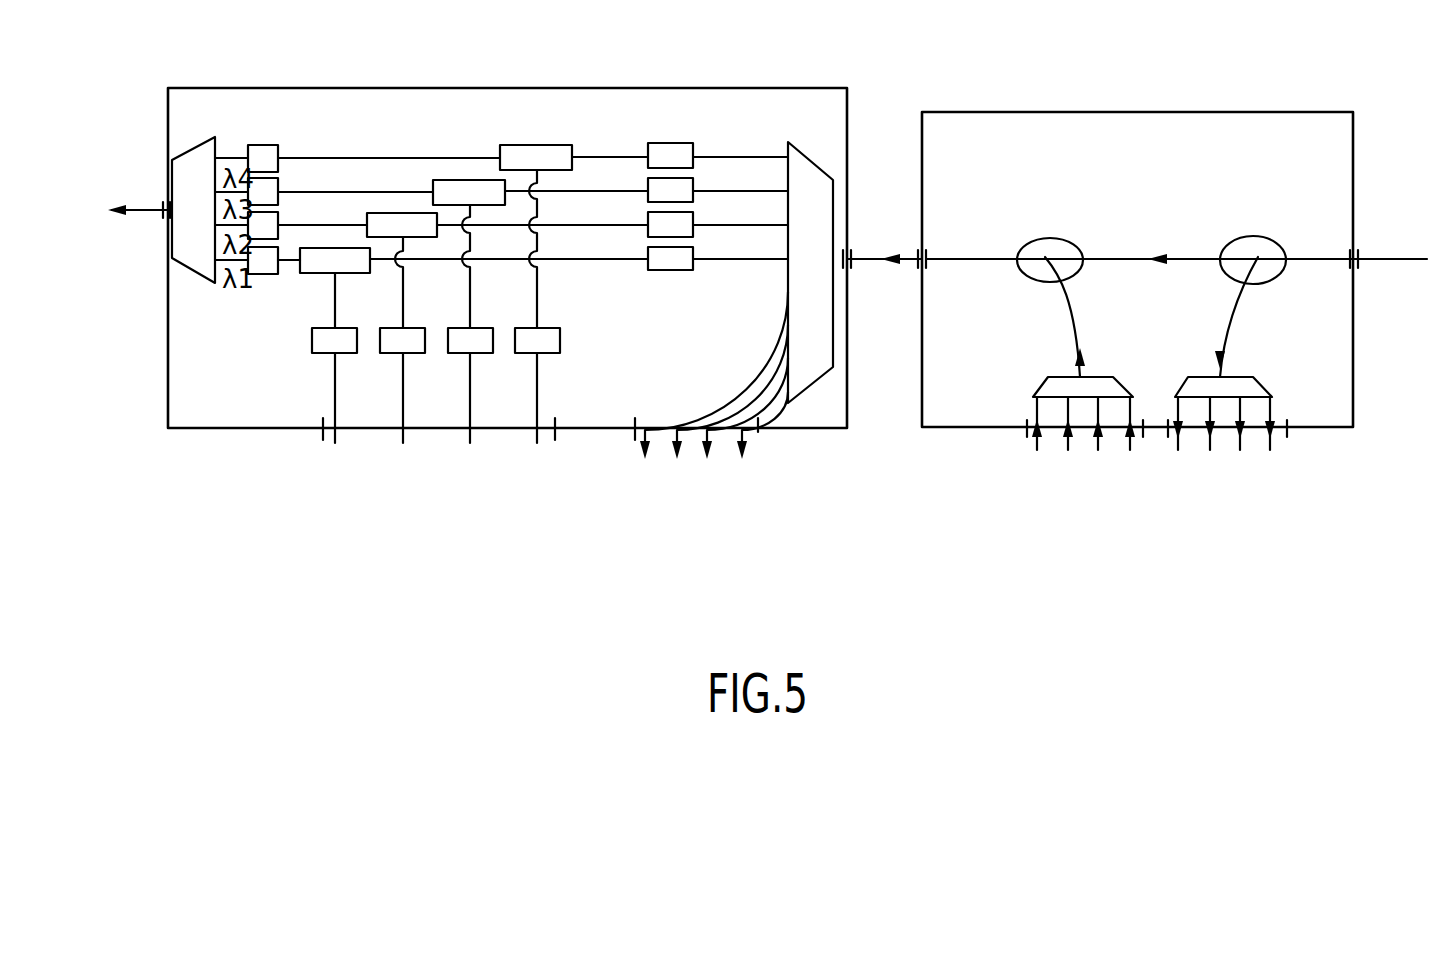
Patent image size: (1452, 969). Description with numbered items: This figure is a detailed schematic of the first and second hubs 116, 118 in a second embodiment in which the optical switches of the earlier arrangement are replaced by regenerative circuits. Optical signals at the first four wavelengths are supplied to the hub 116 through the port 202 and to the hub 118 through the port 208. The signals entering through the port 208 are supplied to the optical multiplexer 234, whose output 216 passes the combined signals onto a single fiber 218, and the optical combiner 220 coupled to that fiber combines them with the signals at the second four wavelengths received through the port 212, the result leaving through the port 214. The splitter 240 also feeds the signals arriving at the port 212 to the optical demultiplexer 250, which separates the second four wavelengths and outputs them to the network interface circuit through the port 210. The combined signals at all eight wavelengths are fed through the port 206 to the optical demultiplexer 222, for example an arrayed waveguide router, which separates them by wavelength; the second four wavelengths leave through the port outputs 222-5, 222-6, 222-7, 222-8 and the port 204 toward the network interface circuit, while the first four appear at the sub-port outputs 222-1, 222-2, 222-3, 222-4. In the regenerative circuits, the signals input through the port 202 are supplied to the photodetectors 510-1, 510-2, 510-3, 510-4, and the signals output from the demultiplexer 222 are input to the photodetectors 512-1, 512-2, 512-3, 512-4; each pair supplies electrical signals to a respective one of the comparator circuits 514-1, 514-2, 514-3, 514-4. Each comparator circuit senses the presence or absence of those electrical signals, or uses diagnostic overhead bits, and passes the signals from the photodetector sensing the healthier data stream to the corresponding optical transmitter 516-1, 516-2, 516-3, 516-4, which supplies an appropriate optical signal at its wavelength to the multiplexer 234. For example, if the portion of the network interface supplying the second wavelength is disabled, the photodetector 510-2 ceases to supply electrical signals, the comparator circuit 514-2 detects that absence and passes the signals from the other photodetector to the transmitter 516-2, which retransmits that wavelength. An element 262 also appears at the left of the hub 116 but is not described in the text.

The hub 116 is at (572, 88).
The hub 118 is at (1105, 112).
The port 202 is at (323, 440).
The port 204 is at (758, 432).
The port 206 is at (848, 257).
The port 208 is at (1027, 437).
The port 210 is at (1290, 437).
The port 212 is at (1357, 254).
The port 214 is at (925, 270).
The output 216 is at (1105, 373).
The fiber 218 is at (1074, 319).
The optical combiner 220 is at (1052, 238).
The optical demultiplexer 222 is at (790, 142).
The sub-port output 222-1 is at (740, 142).
The sub-port output 222-2 is at (740, 177).
The sub-port output 222-3 is at (740, 208).
The sub-port output 222-4 is at (740, 243).
The port output 222-5 is at (714, 359).
The port output 222-6 is at (730, 377).
The port output 222-7 is at (745, 394).
The port output 222-8 is at (756, 412).
The optical multiplexer 234 is at (185, 277).
The splitter 240 is at (1250, 236).
The optical demultiplexer 250 is at (1255, 378).
The output to network 262 is at (166, 210).
The photodetector 510-1 is at (312, 342).
The photodetector 510-2 is at (385, 353).
The photodetector 510-3 is at (488, 355).
The photodetector 510-4 is at (555, 353).
The photodetector 512-1 is at (672, 143).
The photodetector 512-2 is at (648, 196).
The photodetector 512-3 is at (648, 238).
The photodetector 512-4 is at (655, 270).
The comparator circuit 514-1 is at (315, 273).
The comparator circuit 514-2 is at (420, 213).
The comparator circuit 514-3 is at (468, 180).
The comparator circuit 514-4 is at (550, 145).
The optical transmitter 516-1 is at (265, 274).
The optical transmitter 516-2 is at (278, 222).
The optical transmitter 516-3 is at (278, 186).
The optical transmitter 516-4 is at (278, 152).